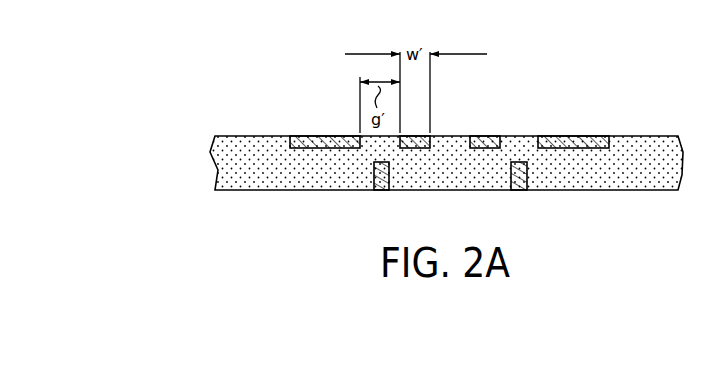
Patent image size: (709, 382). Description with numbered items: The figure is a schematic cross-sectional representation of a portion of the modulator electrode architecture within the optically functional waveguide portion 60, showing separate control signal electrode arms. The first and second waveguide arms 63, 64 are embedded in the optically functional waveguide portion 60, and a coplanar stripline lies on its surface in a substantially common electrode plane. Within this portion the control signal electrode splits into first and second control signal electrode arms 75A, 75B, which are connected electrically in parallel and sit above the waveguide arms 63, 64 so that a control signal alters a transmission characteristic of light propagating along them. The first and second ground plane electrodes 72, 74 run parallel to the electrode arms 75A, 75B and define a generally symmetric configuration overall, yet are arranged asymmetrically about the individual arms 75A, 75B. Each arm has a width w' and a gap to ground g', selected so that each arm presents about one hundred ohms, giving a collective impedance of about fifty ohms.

The optically functional waveguide portion 60 is at (199, 156).
The first ground plane electrode 72 is at (330, 136).
The second ground plane electrode 74 is at (571, 136).
The first control signal electrode arm 75A is at (425, 150).
The second control signal electrode arm 75B is at (482, 136).
The first waveguide arm 63 is at (373, 168).
The second waveguide arm 64 is at (528, 167).